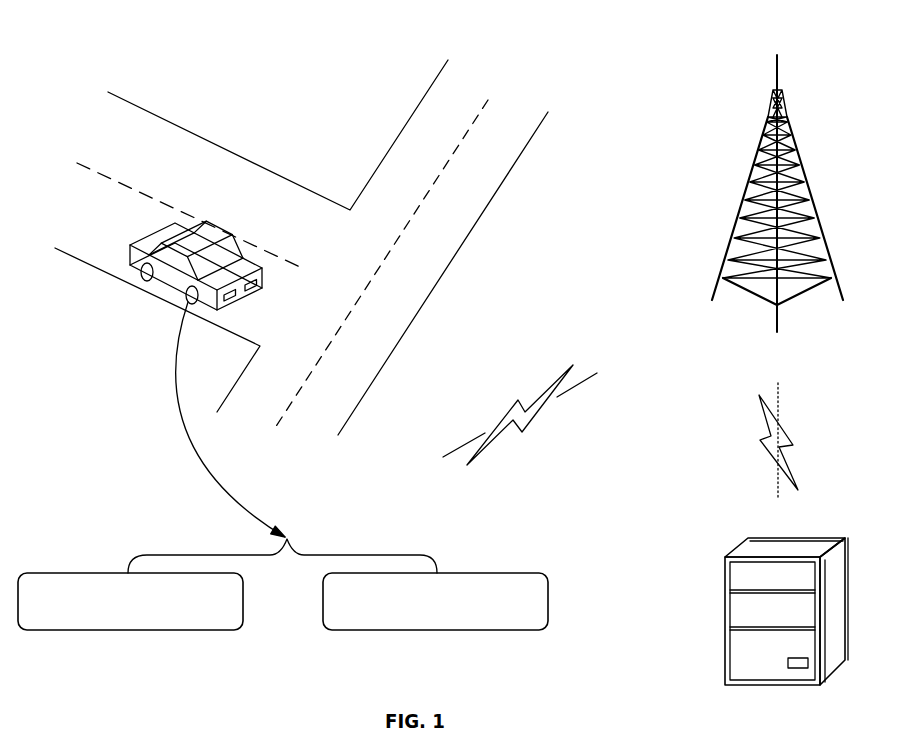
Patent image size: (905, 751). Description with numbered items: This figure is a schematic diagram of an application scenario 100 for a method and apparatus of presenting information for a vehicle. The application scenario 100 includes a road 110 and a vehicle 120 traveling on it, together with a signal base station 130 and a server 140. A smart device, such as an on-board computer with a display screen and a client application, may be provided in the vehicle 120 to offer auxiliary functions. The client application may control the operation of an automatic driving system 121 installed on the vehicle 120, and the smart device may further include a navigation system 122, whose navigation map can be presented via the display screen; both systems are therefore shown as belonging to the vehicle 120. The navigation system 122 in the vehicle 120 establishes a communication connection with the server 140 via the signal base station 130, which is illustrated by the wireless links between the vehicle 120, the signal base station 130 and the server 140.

The application scenario 100 is at (55, 50).
The road 110 is at (491, 97).
The vehicle 120 is at (212, 232).
The automatic driving system 121 is at (210, 630).
The navigation system 122 is at (508, 630).
The signal base station 130 is at (777, 85).
The server 140 is at (792, 537).